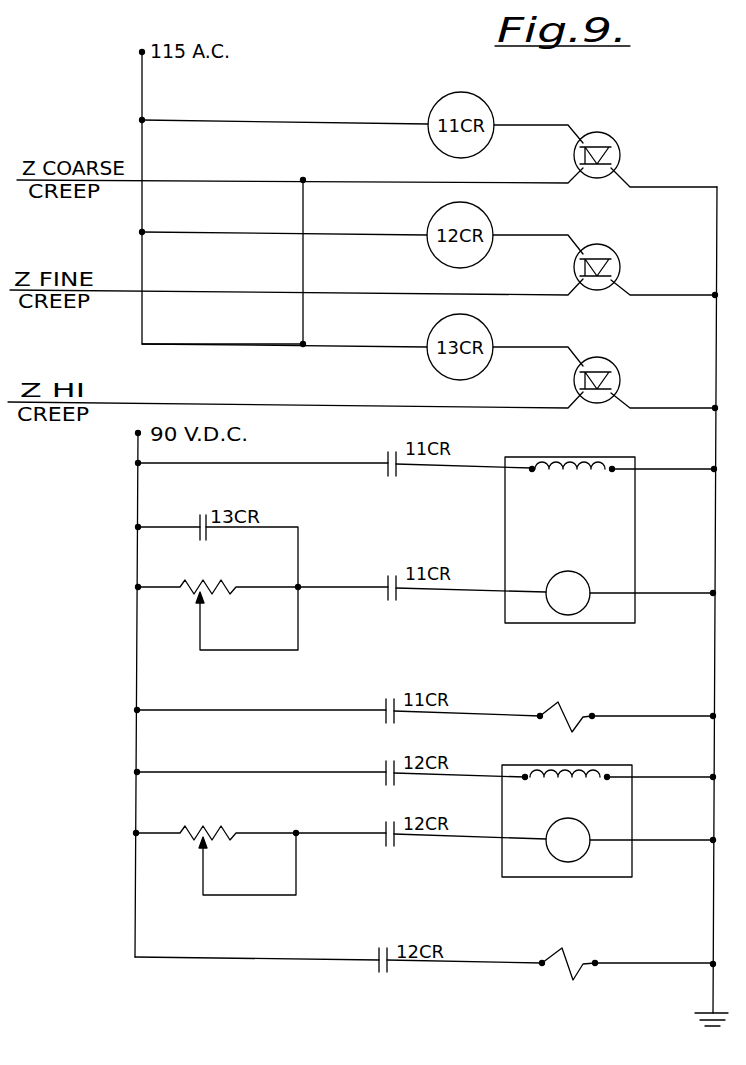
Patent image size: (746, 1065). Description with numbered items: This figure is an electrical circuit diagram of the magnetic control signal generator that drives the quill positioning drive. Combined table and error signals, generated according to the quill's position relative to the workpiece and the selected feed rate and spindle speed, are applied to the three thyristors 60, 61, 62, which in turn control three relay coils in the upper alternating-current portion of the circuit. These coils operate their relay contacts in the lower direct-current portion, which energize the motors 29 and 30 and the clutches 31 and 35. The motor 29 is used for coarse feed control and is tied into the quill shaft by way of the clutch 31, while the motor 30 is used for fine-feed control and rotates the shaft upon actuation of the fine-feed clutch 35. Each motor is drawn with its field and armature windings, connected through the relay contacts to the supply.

The thyristor 60 is at (616, 146).
The thyristor 61 is at (617, 258).
The thyristor 62 is at (617, 371).
The motor 29 is at (633, 625).
The motor 30 is at (632, 877).
The clutch 31 is at (578, 727).
The fine-feed clutch 35 is at (580, 975).